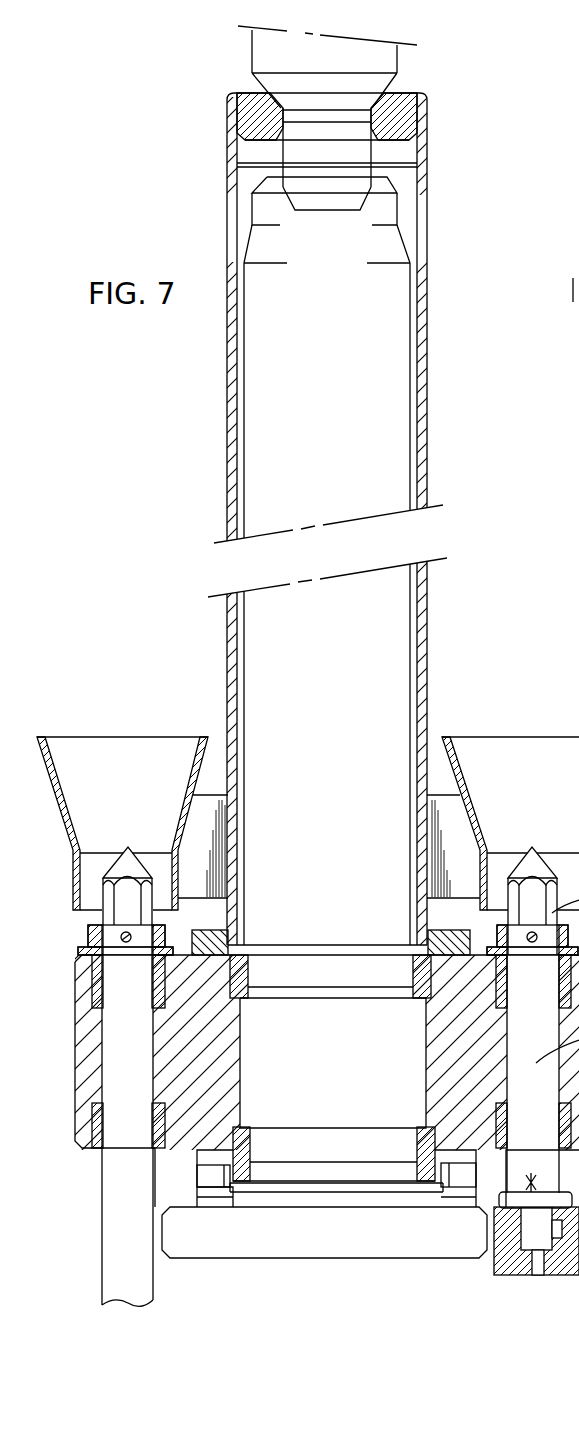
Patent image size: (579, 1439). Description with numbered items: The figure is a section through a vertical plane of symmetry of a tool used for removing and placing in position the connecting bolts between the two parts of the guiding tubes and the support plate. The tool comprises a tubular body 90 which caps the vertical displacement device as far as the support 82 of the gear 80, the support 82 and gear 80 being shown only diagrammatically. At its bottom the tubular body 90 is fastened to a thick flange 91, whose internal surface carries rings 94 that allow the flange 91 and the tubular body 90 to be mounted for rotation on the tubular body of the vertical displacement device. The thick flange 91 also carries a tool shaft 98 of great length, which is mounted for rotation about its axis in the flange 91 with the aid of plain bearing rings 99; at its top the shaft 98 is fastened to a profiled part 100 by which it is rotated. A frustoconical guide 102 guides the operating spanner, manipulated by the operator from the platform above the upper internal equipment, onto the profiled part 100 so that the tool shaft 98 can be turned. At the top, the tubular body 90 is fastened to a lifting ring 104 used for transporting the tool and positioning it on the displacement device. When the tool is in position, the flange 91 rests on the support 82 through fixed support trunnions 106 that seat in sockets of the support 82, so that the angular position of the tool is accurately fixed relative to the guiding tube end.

The gear 80 is at (424, 1237).
The support 82 is at (200, 1197).
The tubular body 90 is at (228, 682).
The thick flange 91 is at (202, 1095).
The rings 94 is at (235, 960).
The tool shaft 98 is at (125, 1250).
The plain bearing rings 99 is at (93, 992).
The profiled part 100 is at (110, 903).
The frustoconical guide 102 is at (82, 802).
The lifting ring 104 is at (250, 111).
The fixed support trunnions 106 is at (208, 1188).